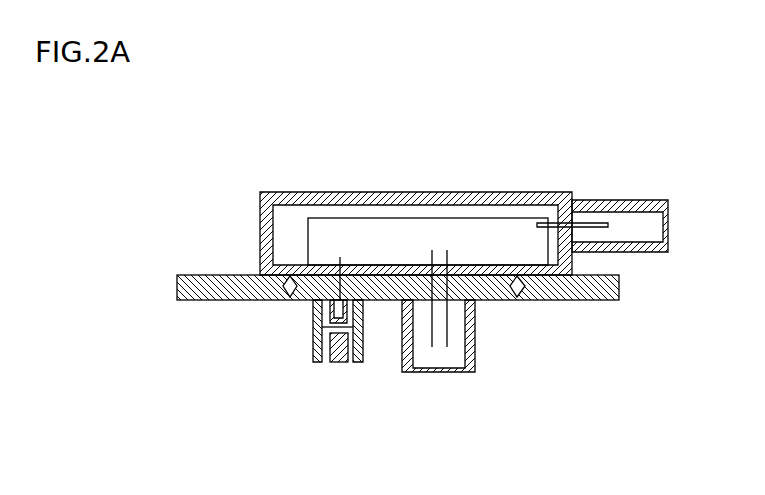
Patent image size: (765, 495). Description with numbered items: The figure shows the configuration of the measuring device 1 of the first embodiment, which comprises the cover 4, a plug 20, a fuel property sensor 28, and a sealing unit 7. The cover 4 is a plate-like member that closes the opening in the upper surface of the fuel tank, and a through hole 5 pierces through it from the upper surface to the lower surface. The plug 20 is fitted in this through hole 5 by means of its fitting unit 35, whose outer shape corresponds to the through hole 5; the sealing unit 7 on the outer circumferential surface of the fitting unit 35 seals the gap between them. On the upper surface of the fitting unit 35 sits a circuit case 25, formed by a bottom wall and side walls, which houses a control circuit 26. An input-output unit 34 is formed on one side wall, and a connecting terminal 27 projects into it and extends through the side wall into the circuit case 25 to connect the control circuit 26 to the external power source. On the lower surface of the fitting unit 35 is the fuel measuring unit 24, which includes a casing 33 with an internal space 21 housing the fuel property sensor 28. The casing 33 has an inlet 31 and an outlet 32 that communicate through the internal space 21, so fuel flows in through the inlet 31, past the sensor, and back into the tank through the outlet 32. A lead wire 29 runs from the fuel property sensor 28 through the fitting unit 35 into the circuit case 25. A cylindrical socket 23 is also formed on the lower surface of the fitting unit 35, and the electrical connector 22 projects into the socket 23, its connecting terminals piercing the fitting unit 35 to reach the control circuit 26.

The measuring device 1 is at (206, 161).
The cover 4 is at (177, 287).
The through hole 5 is at (492, 300).
The sealing unit 7 is at (240, 280).
The plug 20 is at (495, 302).
The internal space 21 is at (320, 330).
The electrical connector 22 is at (450, 322).
The socket 23 is at (413, 372).
The fuel measuring unit 24 is at (310, 358).
The circuit case 25 is at (600, 225).
The control circuit 26 is at (465, 235).
The connecting terminal 27 is at (610, 200).
The fuel property sensor 28 is at (313, 308).
The lead wire 29 is at (340, 257).
The inlet 31 is at (325, 362).
The outlet 32 is at (352, 362).
The casing 33 is at (363, 345).
The input-output unit 34 is at (635, 200).
The fitting unit 35 is at (293, 258).